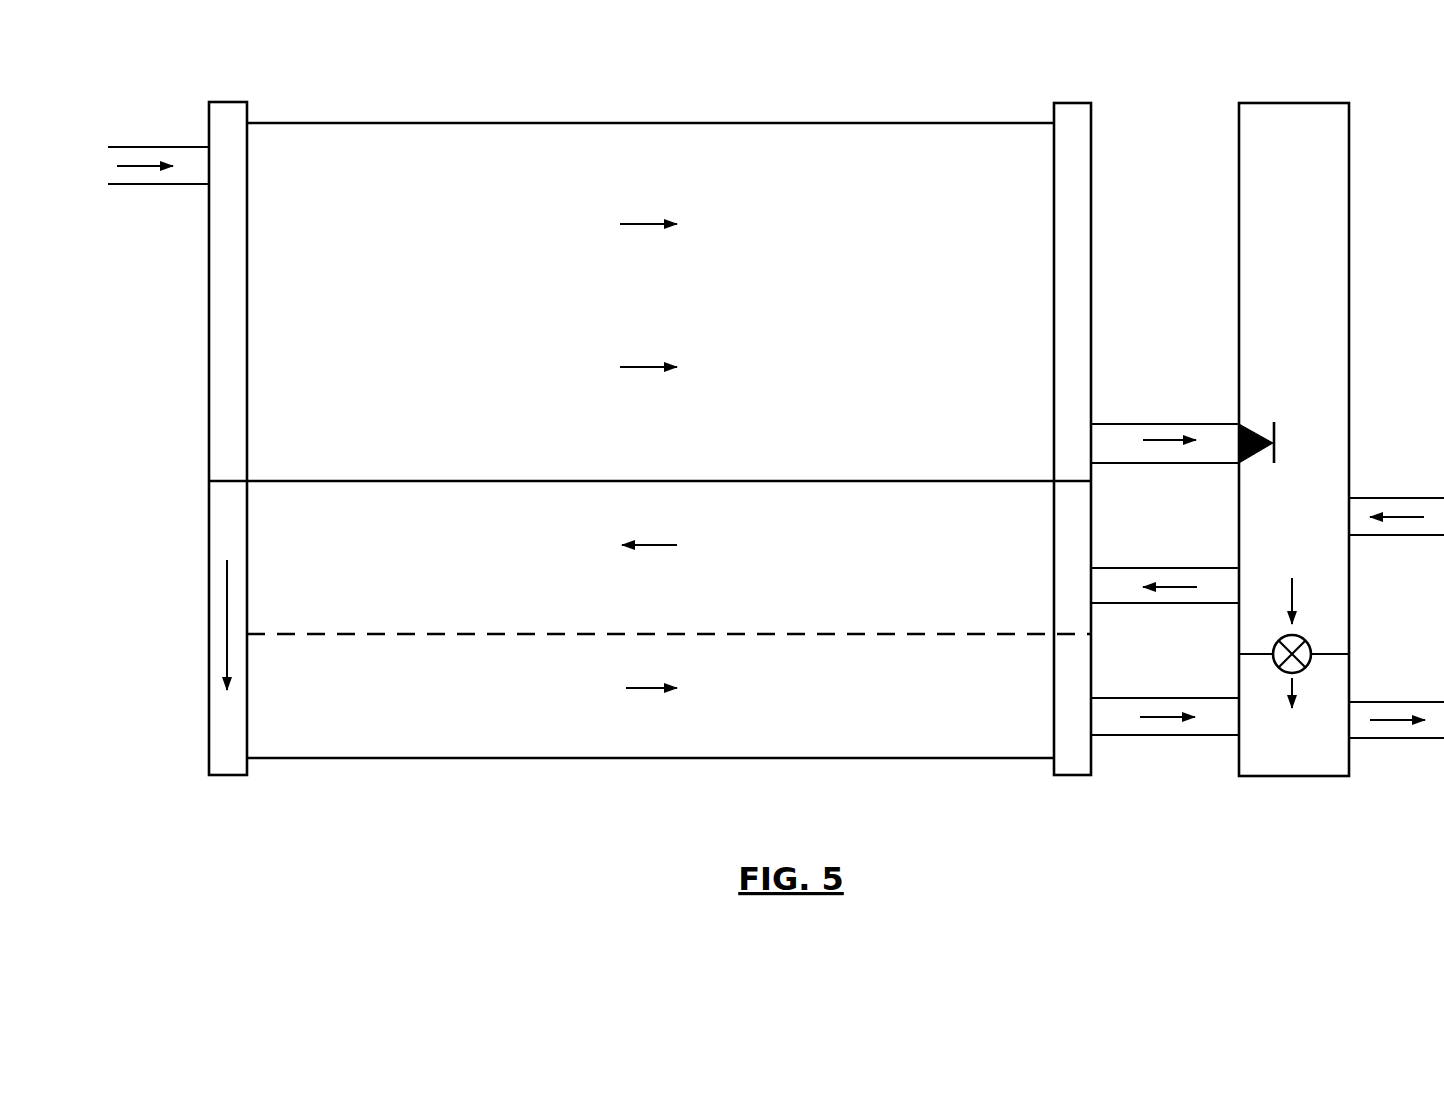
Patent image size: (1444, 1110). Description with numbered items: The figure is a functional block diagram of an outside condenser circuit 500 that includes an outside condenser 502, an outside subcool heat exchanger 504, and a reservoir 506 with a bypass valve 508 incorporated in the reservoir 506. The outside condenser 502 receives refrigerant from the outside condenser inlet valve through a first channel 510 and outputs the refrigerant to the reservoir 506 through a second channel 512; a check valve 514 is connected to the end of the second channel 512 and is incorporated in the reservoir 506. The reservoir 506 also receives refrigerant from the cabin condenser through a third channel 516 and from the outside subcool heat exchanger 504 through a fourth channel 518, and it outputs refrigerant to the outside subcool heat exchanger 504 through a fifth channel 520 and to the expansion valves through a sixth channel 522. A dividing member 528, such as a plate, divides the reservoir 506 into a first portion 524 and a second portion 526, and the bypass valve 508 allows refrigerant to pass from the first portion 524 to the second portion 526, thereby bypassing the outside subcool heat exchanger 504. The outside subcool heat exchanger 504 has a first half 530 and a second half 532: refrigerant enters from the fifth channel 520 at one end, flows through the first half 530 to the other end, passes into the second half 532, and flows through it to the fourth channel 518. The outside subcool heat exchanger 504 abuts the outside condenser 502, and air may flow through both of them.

The outside condenser circuit 500 is at (265, 50).
The outside condenser 502 is at (1092, 147).
The outside subcool heat exchanger 504 is at (1092, 526).
The reservoir 506 is at (1350, 128).
The bypass valve 508 is at (1307, 639).
The first channel 510 is at (148, 147).
The second channel 512 is at (1150, 424).
The check valve 514 is at (1258, 455).
The third channel 516 is at (1368, 537).
The fourth channel 518 is at (1158, 697).
The fifth channel 520 is at (1161, 565).
The sixth channel 522 is at (1380, 740).
The first portion 524 is at (1293, 452).
The second portion 526 is at (1293, 714).
The dividing member 528 is at (1260, 651).
The first half 530 is at (733, 558).
The second half 532 is at (735, 681).